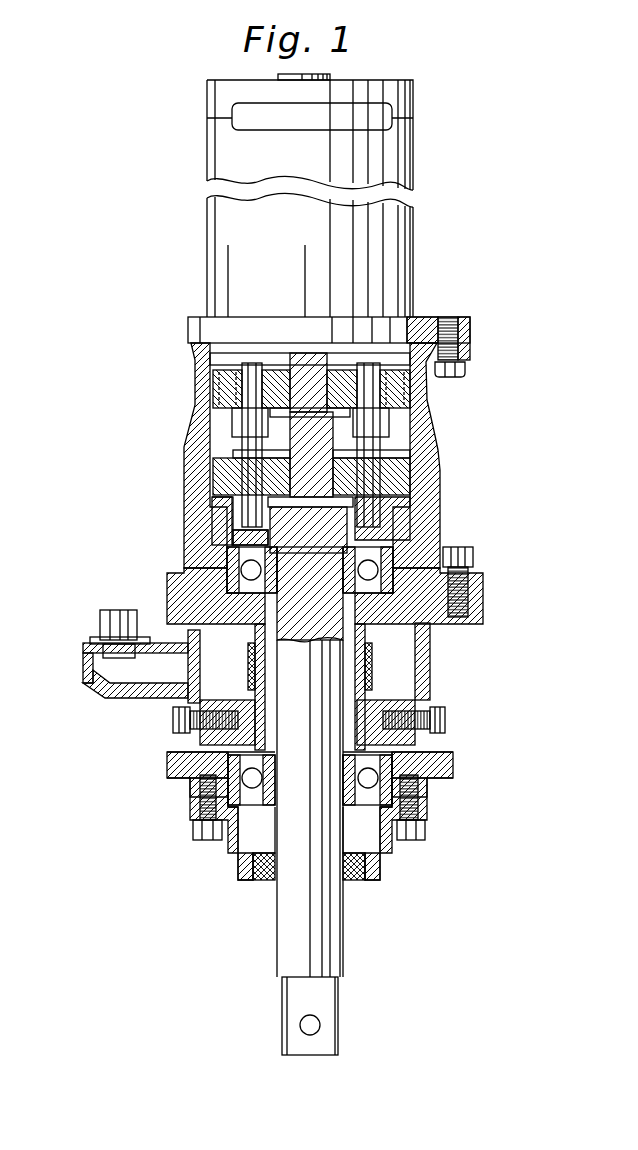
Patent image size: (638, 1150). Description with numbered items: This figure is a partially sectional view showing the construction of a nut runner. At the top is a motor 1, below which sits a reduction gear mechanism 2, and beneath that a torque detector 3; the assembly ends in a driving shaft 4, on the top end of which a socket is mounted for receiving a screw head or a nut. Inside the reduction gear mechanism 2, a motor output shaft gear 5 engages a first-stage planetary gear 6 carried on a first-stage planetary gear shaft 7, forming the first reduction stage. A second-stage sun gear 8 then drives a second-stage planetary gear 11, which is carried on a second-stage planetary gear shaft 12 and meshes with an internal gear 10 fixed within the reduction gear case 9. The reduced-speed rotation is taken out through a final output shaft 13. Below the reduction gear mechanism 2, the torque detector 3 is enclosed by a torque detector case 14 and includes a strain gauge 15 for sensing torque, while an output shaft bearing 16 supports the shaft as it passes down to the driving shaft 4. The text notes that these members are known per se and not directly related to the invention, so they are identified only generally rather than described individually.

The motor 1 is at (402, 161).
The reduction gear mechanism 2 is at (285, 409).
The torque detector 3 is at (285, 713).
The driving shaft 4 is at (343, 944).
The motor output shaft gear 5 is at (312, 372).
The first-stage planetary gear 6 is at (393, 365).
The first-stage planetary gear shaft 7 is at (395, 413).
The second-stage sun gear 8 is at (318, 452).
The reduction gear case 9 is at (432, 437).
The internal gear 10 is at (395, 470).
The second-stage planetary gear 11 is at (388, 485).
The second-stage planetary gear shaft 12 is at (440, 503).
The final output shaft 13 is at (340, 541).
The torque detector case 14 is at (423, 607).
The strain gauge 15 is at (372, 663).
The output shaft bearing 16 is at (377, 773).